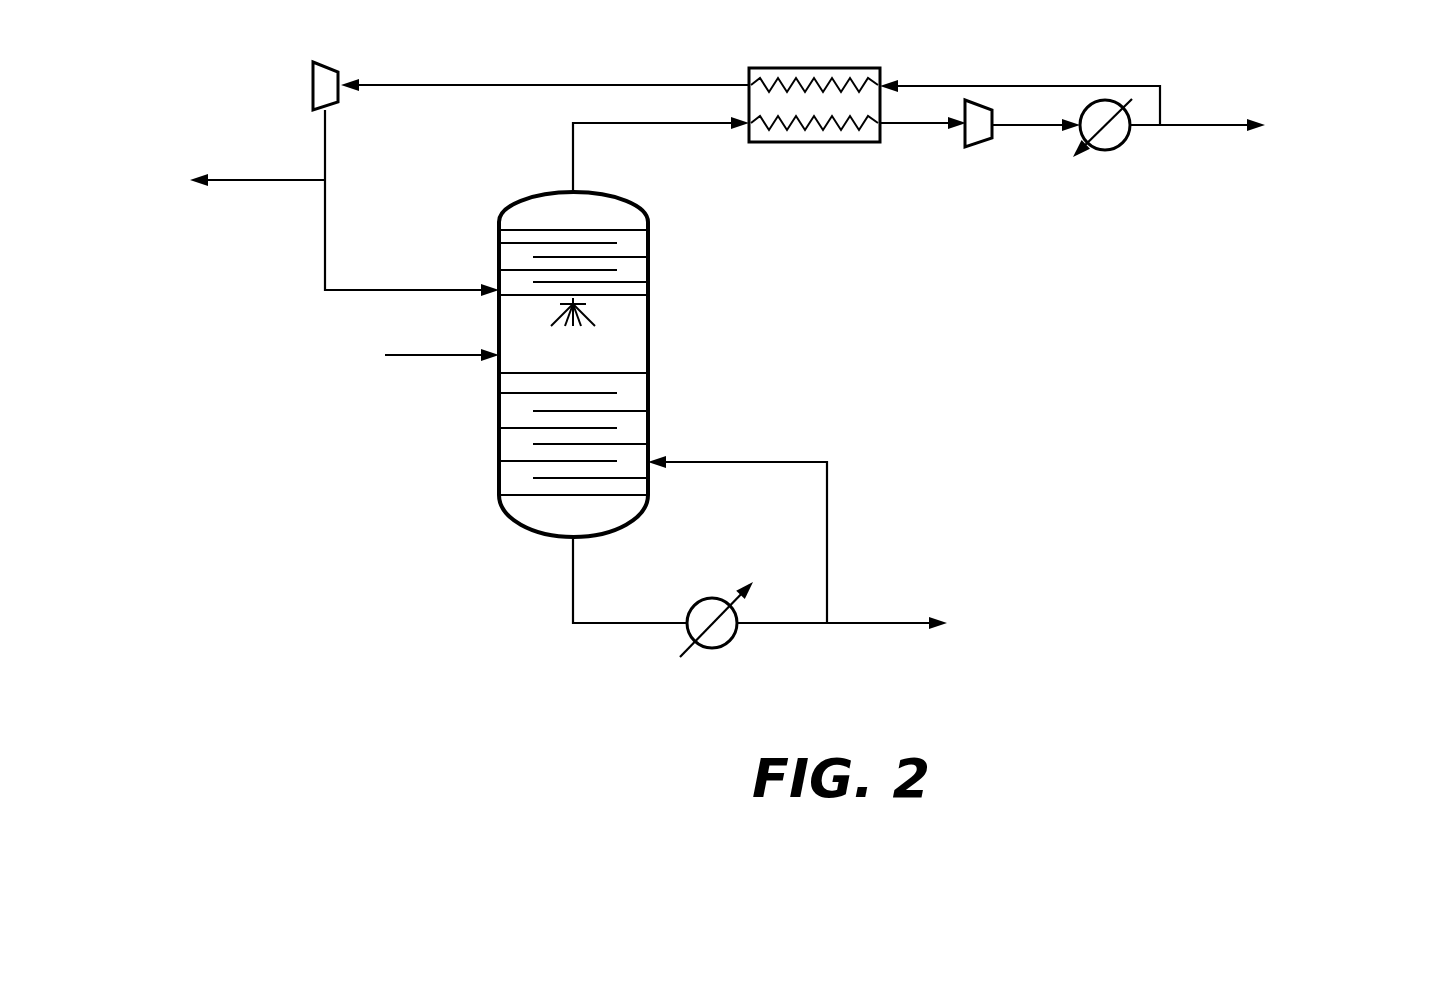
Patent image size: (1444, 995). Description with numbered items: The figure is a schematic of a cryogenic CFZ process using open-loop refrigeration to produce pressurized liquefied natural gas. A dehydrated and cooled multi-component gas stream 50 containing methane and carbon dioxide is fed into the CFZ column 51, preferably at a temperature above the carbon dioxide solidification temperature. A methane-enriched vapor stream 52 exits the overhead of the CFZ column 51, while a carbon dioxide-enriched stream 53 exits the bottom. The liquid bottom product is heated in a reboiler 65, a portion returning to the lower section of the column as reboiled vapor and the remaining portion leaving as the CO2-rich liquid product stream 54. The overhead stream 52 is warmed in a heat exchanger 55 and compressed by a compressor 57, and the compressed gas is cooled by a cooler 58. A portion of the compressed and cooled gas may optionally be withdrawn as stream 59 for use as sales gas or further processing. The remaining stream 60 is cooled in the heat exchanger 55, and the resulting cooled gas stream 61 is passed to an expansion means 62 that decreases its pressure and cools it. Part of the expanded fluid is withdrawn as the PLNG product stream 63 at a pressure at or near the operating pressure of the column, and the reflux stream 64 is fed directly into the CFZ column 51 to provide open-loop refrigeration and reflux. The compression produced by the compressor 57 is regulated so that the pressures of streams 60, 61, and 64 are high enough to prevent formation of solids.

The multi-component gas stream 50 is at (427, 357).
The CFZ column 51 is at (648, 340).
The methane-enriched vapor stream 52 is at (573, 148).
The carbon dioxide-enriched stream 53 is at (572, 592).
The CO2-rich liquid product stream 54 is at (875, 623).
The heat exchanger 55 is at (822, 68).
The compressor 57 is at (980, 148).
The cooler 58 is at (1121, 150).
The sales gas stream 59 is at (1180, 125).
The compressed and cooled gas stream 60 is at (1025, 86).
The cooled gas stream 61 is at (570, 85).
The expansion means 62 is at (322, 62).
The PLNG product stream 63 is at (296, 180).
The reflux stream 64 is at (325, 230).
The reboiler 65 is at (735, 643).